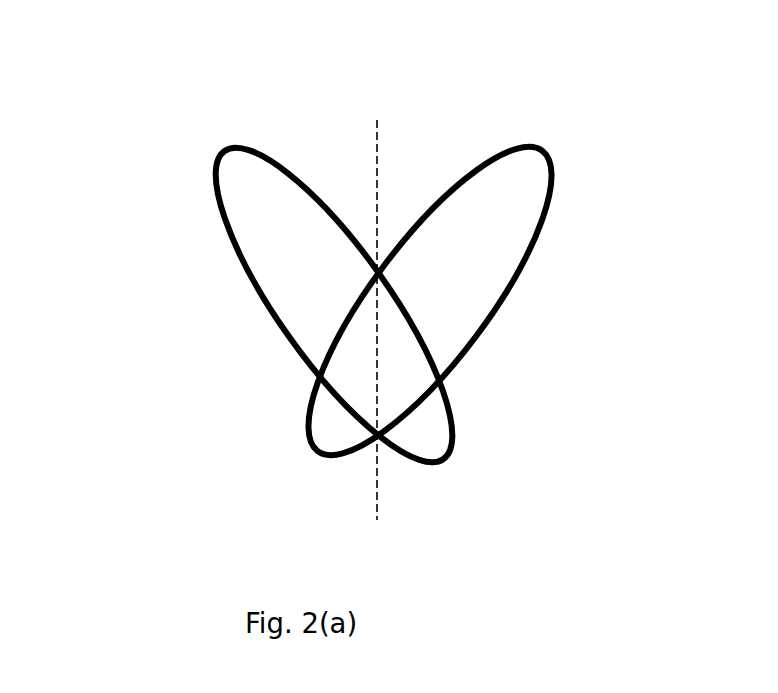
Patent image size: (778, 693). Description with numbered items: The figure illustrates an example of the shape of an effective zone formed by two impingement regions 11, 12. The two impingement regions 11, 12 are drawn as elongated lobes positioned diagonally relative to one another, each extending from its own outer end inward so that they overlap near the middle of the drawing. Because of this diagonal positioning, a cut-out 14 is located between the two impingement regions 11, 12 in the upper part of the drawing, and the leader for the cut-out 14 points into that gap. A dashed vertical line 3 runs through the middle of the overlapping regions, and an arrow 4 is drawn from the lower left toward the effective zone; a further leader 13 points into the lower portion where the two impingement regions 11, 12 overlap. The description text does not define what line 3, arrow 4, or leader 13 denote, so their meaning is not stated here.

The axis of symmetry 3 is at (377, 168).
The direction of propagation 4 is at (233, 397).
The impingement region 11 is at (263, 300).
The impingement region 12 is at (503, 305).
The overlap region of lobes 13 is at (410, 377).
The cut-out 14 is at (403, 210).